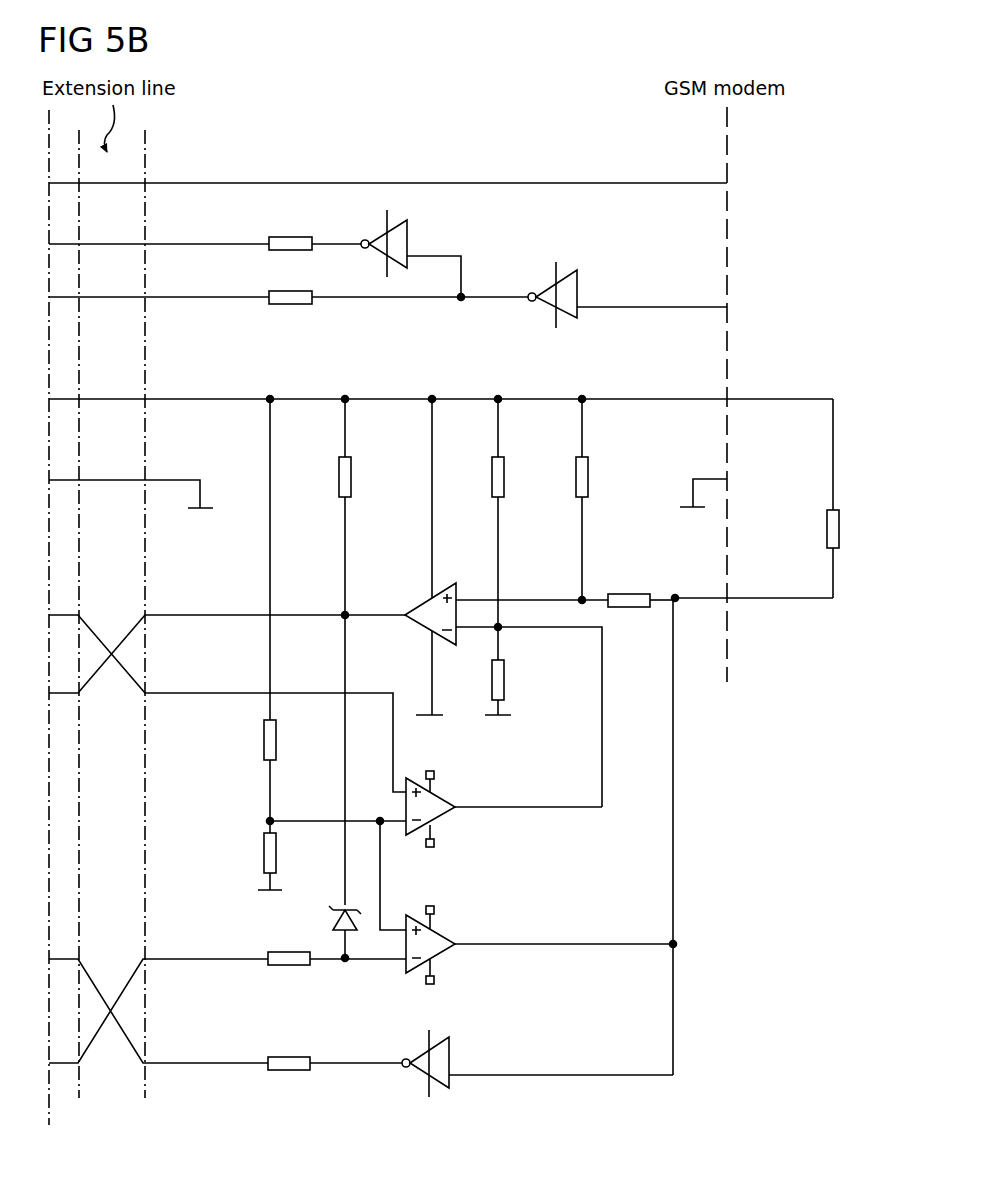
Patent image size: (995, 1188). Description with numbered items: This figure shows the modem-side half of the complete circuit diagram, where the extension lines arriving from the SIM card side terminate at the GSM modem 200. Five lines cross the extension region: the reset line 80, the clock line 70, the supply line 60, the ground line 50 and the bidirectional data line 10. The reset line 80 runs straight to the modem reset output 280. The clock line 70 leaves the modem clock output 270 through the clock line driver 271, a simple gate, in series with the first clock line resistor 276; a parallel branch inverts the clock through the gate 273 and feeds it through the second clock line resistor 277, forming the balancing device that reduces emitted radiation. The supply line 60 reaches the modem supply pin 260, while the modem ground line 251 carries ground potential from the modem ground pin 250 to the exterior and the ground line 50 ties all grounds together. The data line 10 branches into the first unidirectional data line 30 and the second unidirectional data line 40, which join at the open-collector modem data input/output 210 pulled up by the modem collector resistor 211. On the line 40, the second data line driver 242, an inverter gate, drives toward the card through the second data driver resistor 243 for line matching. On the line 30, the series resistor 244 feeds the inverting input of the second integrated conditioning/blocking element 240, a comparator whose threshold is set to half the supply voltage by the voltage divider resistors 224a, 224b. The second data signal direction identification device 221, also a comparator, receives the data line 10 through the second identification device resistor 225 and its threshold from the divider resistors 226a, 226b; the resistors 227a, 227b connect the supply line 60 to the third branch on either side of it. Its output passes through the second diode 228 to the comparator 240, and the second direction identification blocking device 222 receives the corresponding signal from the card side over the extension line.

The GSM modem 200 is at (803, 143).
The modem reset output 280 is at (725, 183).
The modem clock output 270 is at (725, 307).
The modem supply pin 260 is at (725, 397).
The modem ground pin 250 is at (730, 478).
The modem ground line 251 is at (705, 478).
The modem data input/output 210 is at (725, 597).
The modem collector resistor 211 is at (827, 533).
The second identification device resistor 225 is at (628, 608).
The second data signal direction identification device 221 is at (420, 600).
The second direction identification blocking device 222 is at (440, 822).
The second integrated conditioning/blocking element 240 is at (440, 960).
The second data line driver 242 is at (422, 1073).
The second data driver resistor 243 is at (288, 1072).
The series resistor 244 is at (288, 968).
The second diode 228 is at (332, 905).
The voltage divider resistor 224a is at (262, 740).
The voltage divider resistor 224b is at (262, 855).
The voltage divider resistor 226a is at (505, 500).
The voltage divider resistor 226b is at (505, 680).
The resistor 227a is at (340, 500).
The resistor 227b is at (590, 478).
The clock line driver 271 is at (538, 282).
The inverting gate 273 is at (410, 231).
The first clock line resistor 276 is at (280, 236).
The second clock line resistor 277 is at (300, 305).
The reset line 80 is at (116, 188).
The clock line 70 is at (620, 305).
The supply line 60 is at (107, 397).
The ground line 50 is at (108, 478).
The bidirectional data line 10 is at (677, 601).
The first unidirectional data line 30 is at (593, 946).
The second unidirectional data line 40 is at (593, 1077).